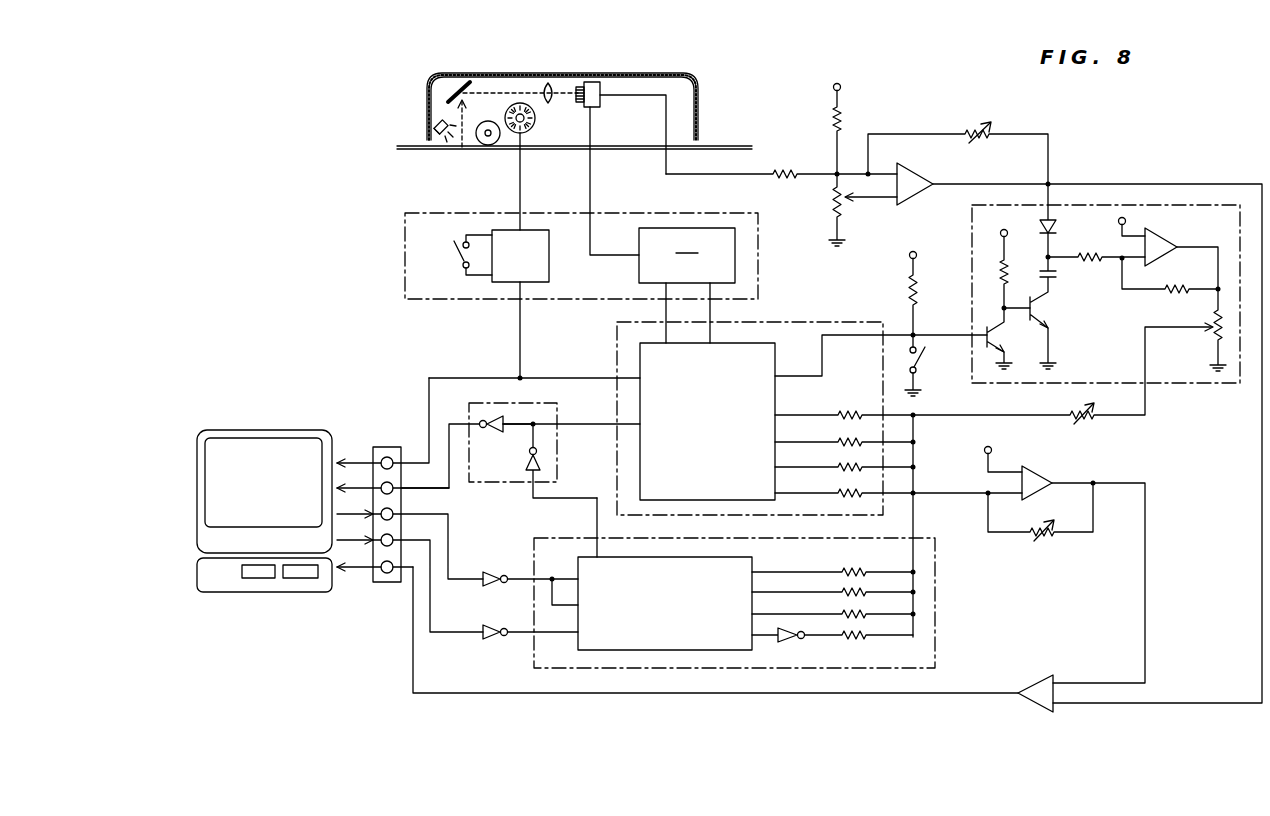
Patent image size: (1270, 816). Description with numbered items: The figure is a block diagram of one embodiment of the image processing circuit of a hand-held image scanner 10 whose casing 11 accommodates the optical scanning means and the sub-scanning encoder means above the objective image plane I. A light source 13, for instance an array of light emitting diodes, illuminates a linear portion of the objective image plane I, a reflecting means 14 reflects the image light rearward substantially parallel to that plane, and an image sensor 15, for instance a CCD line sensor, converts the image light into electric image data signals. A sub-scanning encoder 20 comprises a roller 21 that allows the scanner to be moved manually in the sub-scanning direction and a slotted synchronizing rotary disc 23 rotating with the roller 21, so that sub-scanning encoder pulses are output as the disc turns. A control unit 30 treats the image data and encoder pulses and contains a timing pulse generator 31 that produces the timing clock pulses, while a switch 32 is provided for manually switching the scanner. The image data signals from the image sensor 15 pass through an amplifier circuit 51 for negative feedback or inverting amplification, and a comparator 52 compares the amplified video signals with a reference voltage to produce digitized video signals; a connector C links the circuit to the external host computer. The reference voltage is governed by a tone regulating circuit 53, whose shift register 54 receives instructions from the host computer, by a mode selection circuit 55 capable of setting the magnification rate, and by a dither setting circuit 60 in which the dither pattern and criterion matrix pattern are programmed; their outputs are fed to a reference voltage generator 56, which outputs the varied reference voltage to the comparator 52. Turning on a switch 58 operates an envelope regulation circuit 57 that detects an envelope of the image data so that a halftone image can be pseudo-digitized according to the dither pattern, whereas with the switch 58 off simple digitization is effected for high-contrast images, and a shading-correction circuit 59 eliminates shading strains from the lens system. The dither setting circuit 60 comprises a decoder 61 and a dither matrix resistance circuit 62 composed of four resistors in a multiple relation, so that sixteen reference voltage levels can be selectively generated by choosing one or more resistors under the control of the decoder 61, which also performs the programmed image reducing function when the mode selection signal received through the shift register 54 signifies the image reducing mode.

The image scanner 10 is at (567, 144).
The casing 11 is at (695, 84).
The objective image plane I is at (728, 147).
The light source 13 is at (435, 124).
The reflecting means 14 is at (455, 92).
The image sensor 15 is at (588, 82).
The roller 21 is at (482, 142).
The synchronizing rotary disc 23 is at (530, 125).
The sub-scanning encoder 20 is at (508, 268).
The control unit 30 is at (405, 251).
The timing pulse generator 31 is at (687, 285).
The switch 32 is at (458, 255).
The amplifier circuit 51 is at (912, 188).
The comparator 52 is at (1045, 681).
The tone regulating circuit 53 is at (938, 615).
The shift register 54 is at (700, 593).
The mode selection circuit 55 is at (502, 483).
The reference voltage generator 56 is at (1002, 540).
The envelope regulation circuit 57 is at (1198, 388).
The switch 58 is at (922, 364).
The shading-correction circuit 59 is at (1088, 420).
The dither setting circuit 60 is at (783, 322).
The decoder 61 is at (695, 452).
The dither matrix resistance circuit 62 is at (848, 510).
The connector C is at (387, 447).